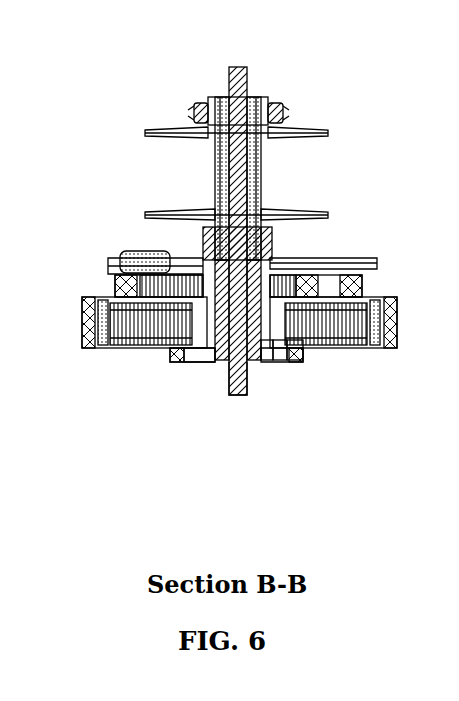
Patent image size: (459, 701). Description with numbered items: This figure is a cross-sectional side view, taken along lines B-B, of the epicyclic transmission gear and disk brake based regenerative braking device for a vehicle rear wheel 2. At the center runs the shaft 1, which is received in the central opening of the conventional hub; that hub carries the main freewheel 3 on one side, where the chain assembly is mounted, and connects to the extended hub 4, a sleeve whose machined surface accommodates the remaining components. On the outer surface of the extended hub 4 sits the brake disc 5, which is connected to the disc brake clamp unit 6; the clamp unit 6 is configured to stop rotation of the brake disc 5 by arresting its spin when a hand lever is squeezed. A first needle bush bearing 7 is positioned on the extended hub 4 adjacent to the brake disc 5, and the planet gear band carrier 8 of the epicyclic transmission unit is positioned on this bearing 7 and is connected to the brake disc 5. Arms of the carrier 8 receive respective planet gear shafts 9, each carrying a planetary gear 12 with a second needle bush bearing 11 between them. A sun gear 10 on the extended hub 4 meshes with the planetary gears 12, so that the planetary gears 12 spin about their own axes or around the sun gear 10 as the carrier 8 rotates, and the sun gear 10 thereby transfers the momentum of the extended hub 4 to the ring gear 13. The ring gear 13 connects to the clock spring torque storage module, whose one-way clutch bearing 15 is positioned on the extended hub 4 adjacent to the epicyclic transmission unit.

The shaft 1 is at (238, 62).
The rear wheel 2 is at (279, 118).
The main freewheel 3 is at (199, 103).
The extended hub 4 is at (266, 357).
The brake disc 5 is at (102, 264).
The disc brake clamp unit 6 is at (118, 262).
The first needle bush bearing 7 is at (318, 264).
The planet gear band carrier 8 is at (392, 330).
The planet gear shaft 9 is at (183, 286).
The sun gear 10 is at (276, 292).
The second needle bush bearing 11 is at (281, 350).
The planetary gear 12 is at (241, 389).
The ring gear 13 is at (200, 352).
The one-way clutch bearing 15 is at (300, 350).